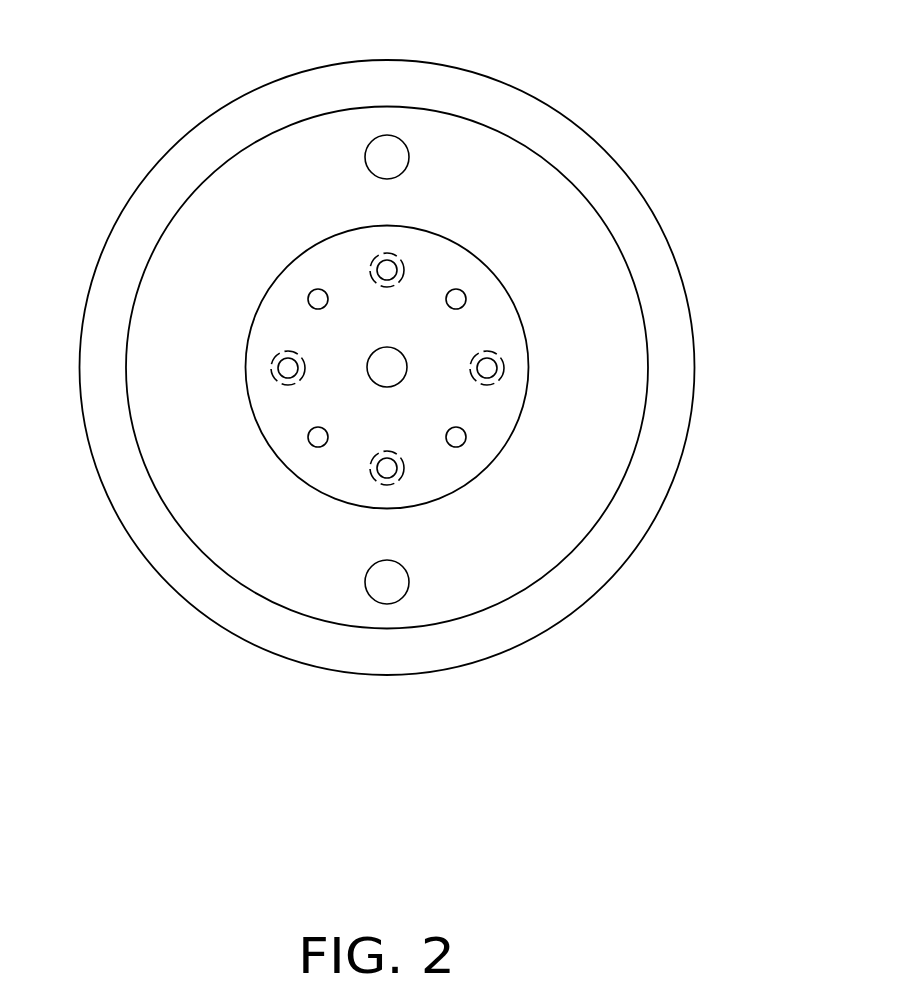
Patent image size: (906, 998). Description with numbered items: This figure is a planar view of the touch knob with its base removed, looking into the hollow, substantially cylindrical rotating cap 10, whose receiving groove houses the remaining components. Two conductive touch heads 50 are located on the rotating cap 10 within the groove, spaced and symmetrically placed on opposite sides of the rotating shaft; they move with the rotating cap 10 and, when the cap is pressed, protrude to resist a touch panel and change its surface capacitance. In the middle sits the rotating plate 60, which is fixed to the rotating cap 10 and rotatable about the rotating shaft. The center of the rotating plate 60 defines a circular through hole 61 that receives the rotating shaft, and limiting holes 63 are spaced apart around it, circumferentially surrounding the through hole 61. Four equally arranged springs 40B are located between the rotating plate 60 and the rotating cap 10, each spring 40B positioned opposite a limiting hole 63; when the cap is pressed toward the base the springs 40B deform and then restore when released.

The rotating cap 10 is at (590, 162).
The conductive touch head 50 is at (390, 155).
The rotating plate 60 is at (492, 322).
The through hole 61 is at (388, 377).
The limiting hole 63 is at (317, 300).
The spring 40B is at (503, 363).